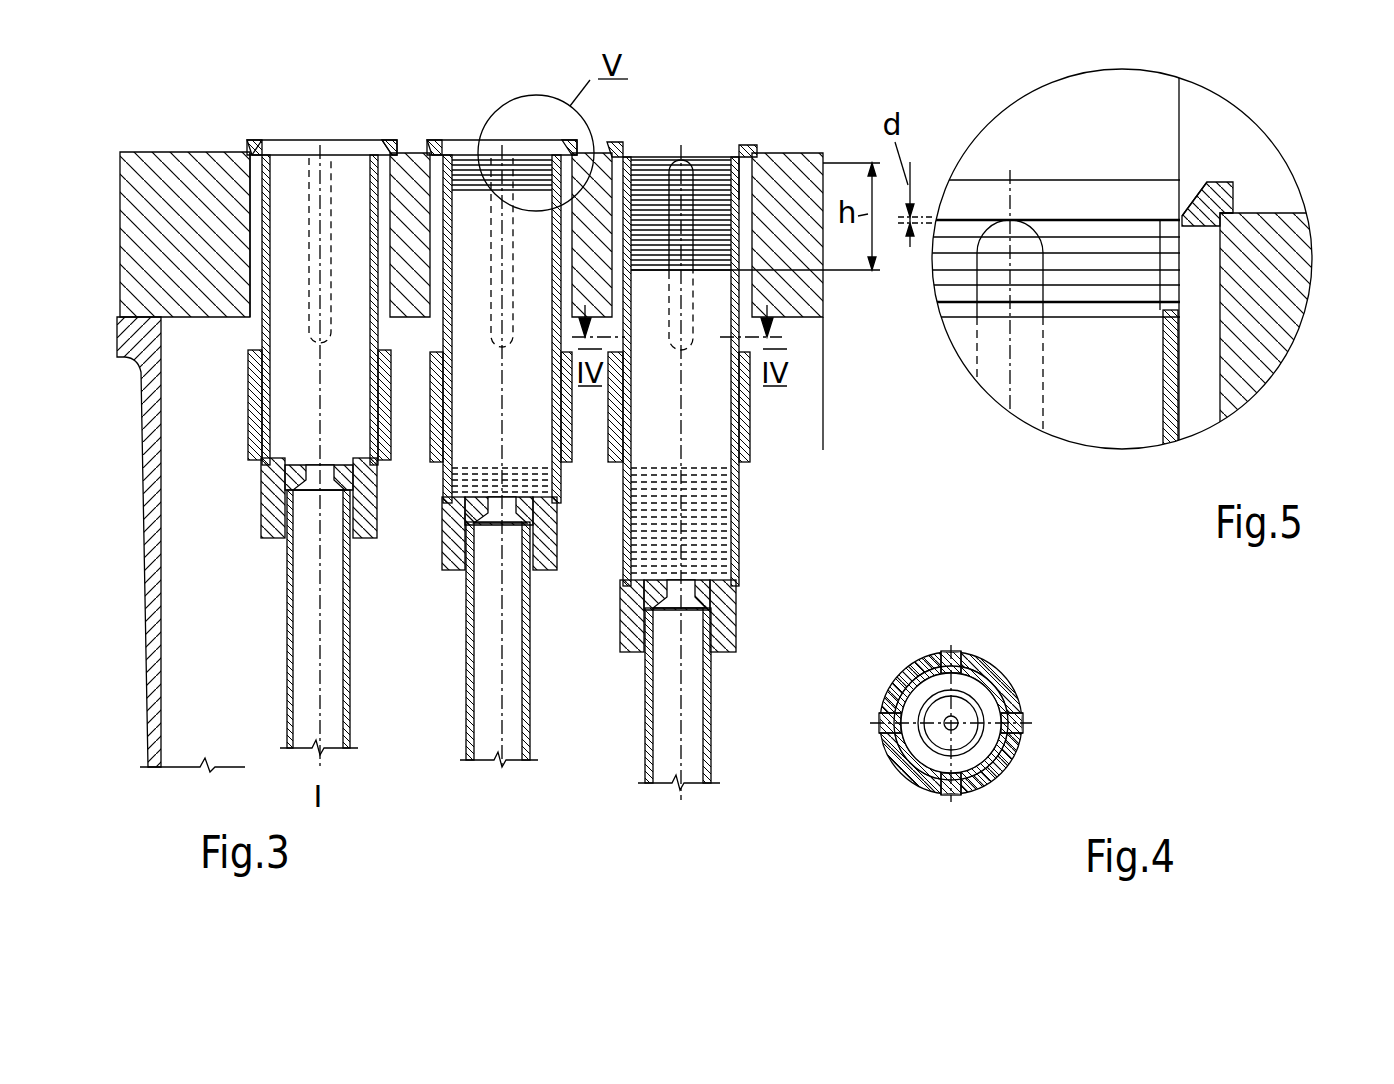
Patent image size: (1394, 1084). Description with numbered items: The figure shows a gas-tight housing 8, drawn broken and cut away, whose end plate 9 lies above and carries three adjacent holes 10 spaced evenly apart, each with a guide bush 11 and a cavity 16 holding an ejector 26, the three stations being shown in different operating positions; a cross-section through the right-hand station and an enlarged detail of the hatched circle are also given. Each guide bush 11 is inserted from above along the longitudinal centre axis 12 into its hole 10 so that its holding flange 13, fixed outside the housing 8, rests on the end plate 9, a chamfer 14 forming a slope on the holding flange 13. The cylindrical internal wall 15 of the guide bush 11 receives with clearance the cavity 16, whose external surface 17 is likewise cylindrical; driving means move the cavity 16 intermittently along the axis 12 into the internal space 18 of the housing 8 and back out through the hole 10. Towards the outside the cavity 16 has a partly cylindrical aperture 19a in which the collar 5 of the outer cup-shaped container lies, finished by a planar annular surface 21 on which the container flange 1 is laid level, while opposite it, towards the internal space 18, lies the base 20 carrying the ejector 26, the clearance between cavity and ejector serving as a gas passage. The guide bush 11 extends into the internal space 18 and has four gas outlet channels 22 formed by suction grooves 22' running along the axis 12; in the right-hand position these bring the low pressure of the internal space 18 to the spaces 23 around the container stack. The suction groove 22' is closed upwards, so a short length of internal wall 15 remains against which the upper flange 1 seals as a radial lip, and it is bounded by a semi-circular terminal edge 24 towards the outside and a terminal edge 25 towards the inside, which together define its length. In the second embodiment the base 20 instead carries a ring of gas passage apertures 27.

In FIG. 5, the flange 1 is at (1176, 305).
In FIG. 5, the collar 5 is at (950, 310).
In FIG. 3, the gas-tight housing 8 is at (112, 300).
In FIG. 3, the end plate 9 is at (142, 190).
In FIG. 5, the end plate 9 is at (1298, 290).
In FIG. 3, the hole 10 is at (252, 227).
In FIG. 5, the hole 10 is at (1222, 400).
In FIG. 3, the guide bush 11 is at (257, 395).
In FIG. 4, the guide bush 11 is at (998, 767).
In FIG. 3, the longitudinal centre axis 12 is at (313, 710).
In FIG. 4, the longitudinal centre axis 12 is at (962, 712).
In FIG. 5, the longitudinal centre axis 12 is at (1005, 415).
In FIG. 3, the holding flange 13 is at (253, 148).
In FIG. 5, the holding flange 13 is at (1218, 197).
In FIG. 3, the chamfer 14 is at (262, 152).
In FIG. 5, the chamfer 14 is at (1196, 212).
In FIG. 3, the internal wall 15 is at (378, 200).
In FIG. 4, the internal wall 15 is at (1002, 698).
In FIG. 5, the internal wall 15 is at (1160, 487).
In FIG. 3, the cavity 16 is at (262, 480).
In FIG. 4, the cavity 16 is at (892, 765).
In FIG. 5, the cavity 16 is at (1170, 380).
In FIG. 5, the external surface 17 is at (1180, 345).
In FIG. 3, the internal space 18 is at (387, 698).
In FIG. 5, the aperture 19a is at (1160, 315).
In FIG. 4, the base 20 is at (912, 698).
In FIG. 5, the planar annular surface 21 is at (1176, 300).
In FIG. 5, the gas outlet channel 22 is at (1050, 458).
In FIG. 3, the suction groove 22' is at (434, 227).
In FIG. 4, the suction groove 22' is at (992, 682).
In FIG. 3, the space 23 is at (743, 207).
In FIG. 5, the space 23 is at (1238, 212).
In FIG. 5, the terminal edge 24 is at (1015, 220).
In FIG. 3, the terminal edge 25 is at (498, 350).
In FIG. 3, the ejector 26 is at (267, 513).
In FIG. 4, the ejector 26 is at (938, 742).
In FIG. 3, the gas passage aperture 27 is at (463, 513).
In FIG. 4, the gas passage aperture 27 is at (953, 716).